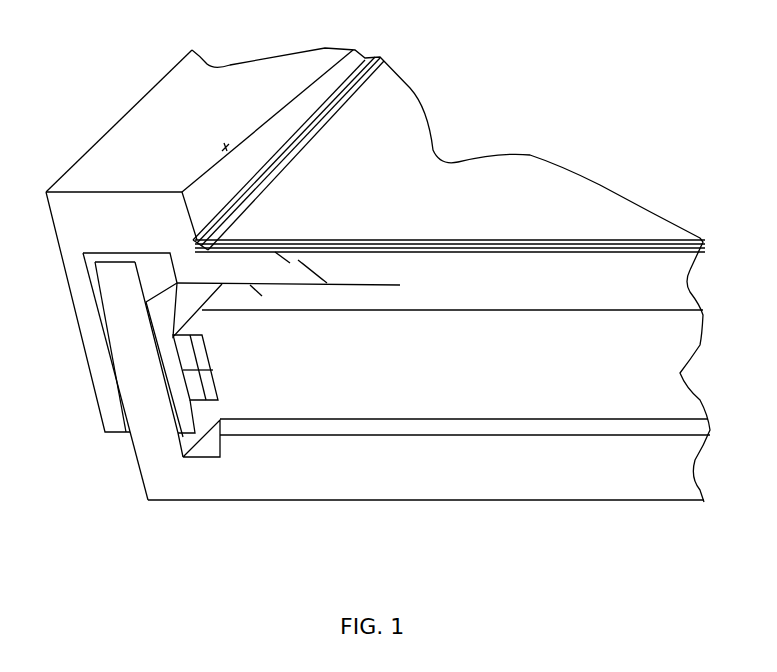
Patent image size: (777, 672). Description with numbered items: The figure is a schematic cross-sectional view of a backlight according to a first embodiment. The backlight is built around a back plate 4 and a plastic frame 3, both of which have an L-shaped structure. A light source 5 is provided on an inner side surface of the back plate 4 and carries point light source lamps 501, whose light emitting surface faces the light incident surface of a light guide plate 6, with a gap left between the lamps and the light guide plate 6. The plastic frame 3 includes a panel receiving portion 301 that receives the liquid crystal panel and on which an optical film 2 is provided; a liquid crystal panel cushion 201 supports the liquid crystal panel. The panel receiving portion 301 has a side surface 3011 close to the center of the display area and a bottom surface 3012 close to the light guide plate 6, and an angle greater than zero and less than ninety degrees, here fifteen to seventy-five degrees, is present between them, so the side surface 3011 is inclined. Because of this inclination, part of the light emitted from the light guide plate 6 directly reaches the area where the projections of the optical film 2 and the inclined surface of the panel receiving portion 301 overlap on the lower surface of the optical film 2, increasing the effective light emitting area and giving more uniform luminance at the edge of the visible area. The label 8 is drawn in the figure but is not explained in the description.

The optical film 2 is at (375, 240).
The liquid crystal panel cushion 201 is at (222, 218).
The plastic frame 3 is at (123, 227).
The back plate 4 is at (123, 327).
The light source 5 is at (193, 403).
The point light source lamps 501 is at (212, 370).
The light guide plate 6 is at (367, 400).
The gap 8 is at (297, 285).
The panel receiving portion 301 is at (327, 281).
The side surface of the panel receiving portion 3011 is at (275, 253).
The bottom surface of the panel receiving portion 3012 is at (250, 287).